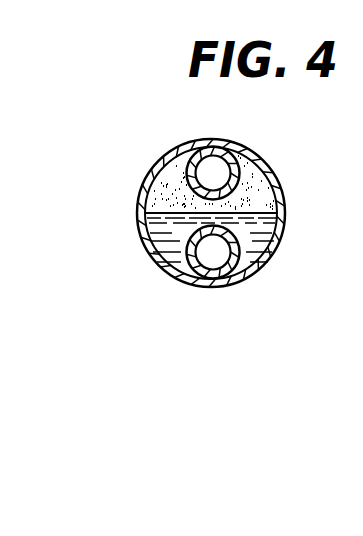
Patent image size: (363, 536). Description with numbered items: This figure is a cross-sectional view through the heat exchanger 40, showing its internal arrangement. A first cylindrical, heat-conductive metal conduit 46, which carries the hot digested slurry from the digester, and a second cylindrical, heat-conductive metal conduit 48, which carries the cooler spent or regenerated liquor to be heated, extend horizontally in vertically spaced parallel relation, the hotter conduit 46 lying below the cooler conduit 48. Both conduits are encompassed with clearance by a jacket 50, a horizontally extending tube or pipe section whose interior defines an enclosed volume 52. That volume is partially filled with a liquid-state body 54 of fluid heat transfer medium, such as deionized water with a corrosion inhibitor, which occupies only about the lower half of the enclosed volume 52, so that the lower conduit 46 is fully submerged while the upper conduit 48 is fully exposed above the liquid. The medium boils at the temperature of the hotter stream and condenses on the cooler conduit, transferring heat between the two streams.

The heat exchanger 40 is at (245, 134).
The first conduit 46 is at (169, 272).
The second conduit 48 is at (186, 167).
The jacket 50 is at (254, 269).
The enclosed volume 52 is at (262, 186).
The liquid-state body of heat transfer medium 54 is at (266, 240).